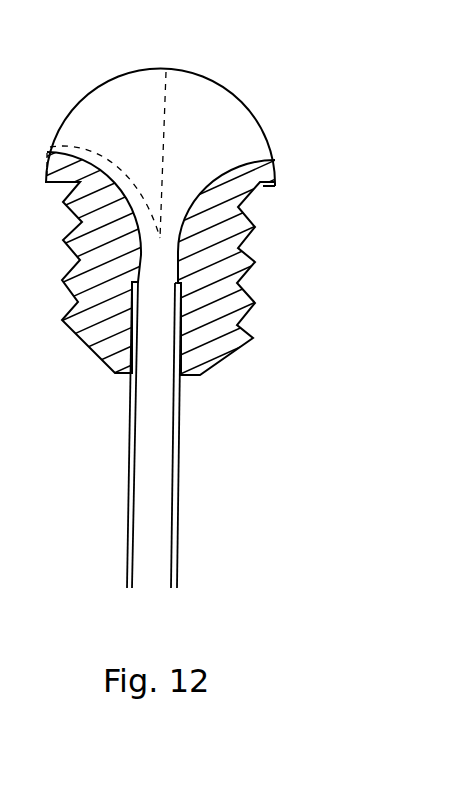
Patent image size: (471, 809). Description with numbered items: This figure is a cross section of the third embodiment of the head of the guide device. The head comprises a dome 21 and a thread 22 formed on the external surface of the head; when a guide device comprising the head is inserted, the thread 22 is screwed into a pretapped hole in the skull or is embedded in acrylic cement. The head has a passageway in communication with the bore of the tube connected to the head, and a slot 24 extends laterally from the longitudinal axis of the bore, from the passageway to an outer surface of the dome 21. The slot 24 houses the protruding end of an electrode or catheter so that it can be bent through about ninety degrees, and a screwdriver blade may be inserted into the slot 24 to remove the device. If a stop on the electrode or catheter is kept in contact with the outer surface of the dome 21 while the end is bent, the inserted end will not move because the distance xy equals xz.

The dome 21 is at (268, 137).
The thread 22 is at (258, 262).
The slot 24 is at (208, 118).